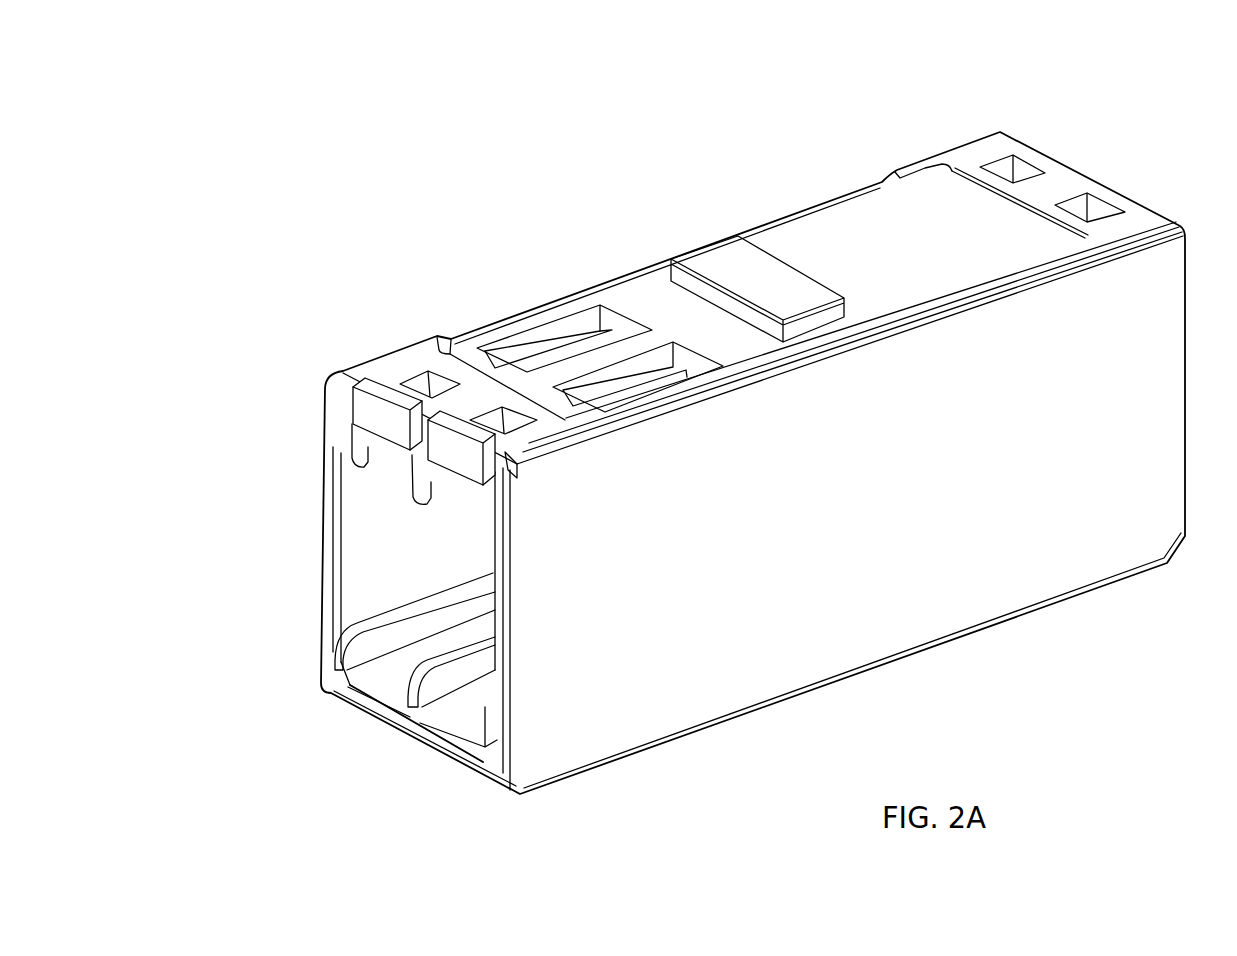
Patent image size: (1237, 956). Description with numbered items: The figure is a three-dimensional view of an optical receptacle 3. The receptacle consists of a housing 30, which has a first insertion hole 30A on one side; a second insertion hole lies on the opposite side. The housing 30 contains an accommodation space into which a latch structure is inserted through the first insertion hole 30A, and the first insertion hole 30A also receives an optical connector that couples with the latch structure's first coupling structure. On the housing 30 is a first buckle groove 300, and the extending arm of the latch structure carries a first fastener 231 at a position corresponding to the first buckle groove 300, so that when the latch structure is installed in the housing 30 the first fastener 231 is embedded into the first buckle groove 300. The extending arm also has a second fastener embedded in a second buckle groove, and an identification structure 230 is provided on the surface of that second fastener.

The optical receptacle 3 is at (283, 288).
The housing 30 is at (778, 215).
The identification structure 230 is at (360, 398).
The first fastener 231 is at (493, 350).
The first buckle groove 300 is at (563, 337).
The first insertion hole 30A is at (427, 570).